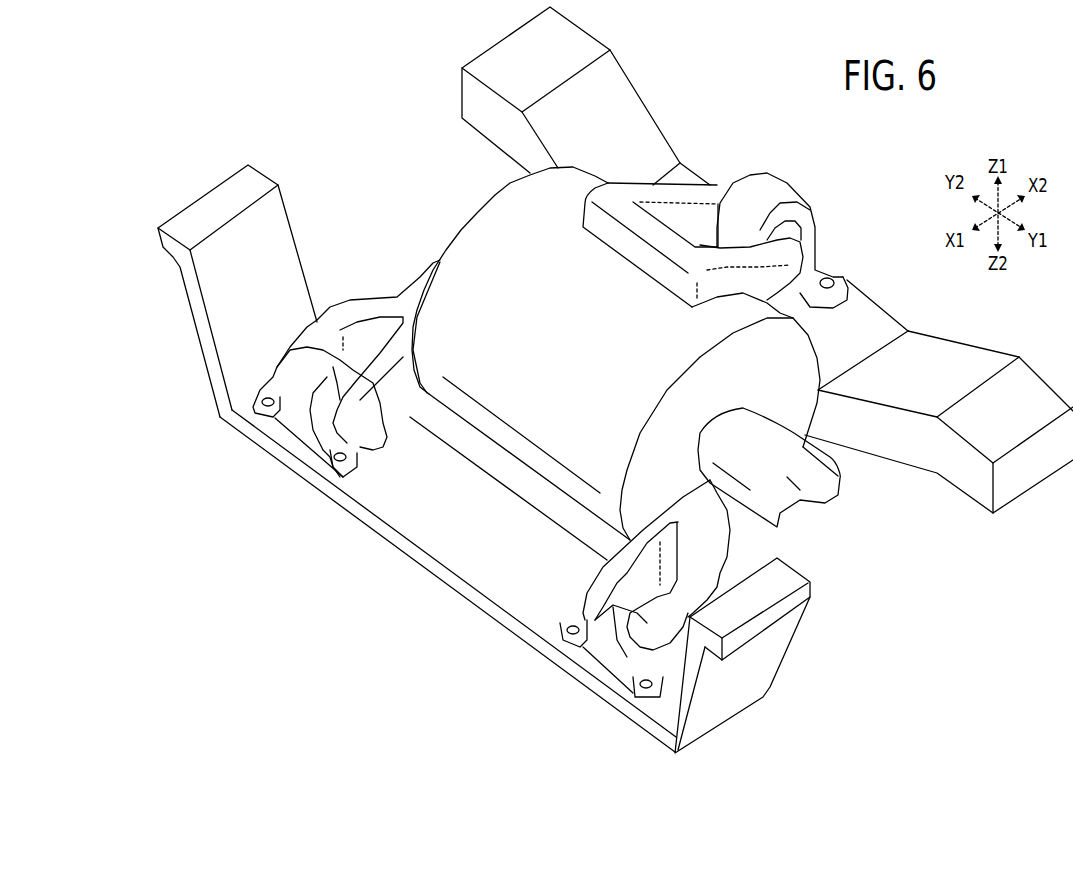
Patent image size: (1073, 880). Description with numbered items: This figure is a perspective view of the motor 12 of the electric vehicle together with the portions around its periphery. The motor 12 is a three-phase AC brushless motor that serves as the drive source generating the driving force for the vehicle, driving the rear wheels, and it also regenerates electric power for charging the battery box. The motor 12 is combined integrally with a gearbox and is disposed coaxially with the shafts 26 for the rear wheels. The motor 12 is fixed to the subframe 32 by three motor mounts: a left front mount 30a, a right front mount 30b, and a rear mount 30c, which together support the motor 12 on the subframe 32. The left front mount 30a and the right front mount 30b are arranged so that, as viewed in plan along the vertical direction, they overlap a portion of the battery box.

The motor 12 is at (498, 227).
The shaft 26 is at (815, 500).
The left front mount 30a is at (603, 637).
The right front mount 30b is at (293, 413).
The rear mount 30c is at (770, 200).
The subframe 32 is at (757, 667).